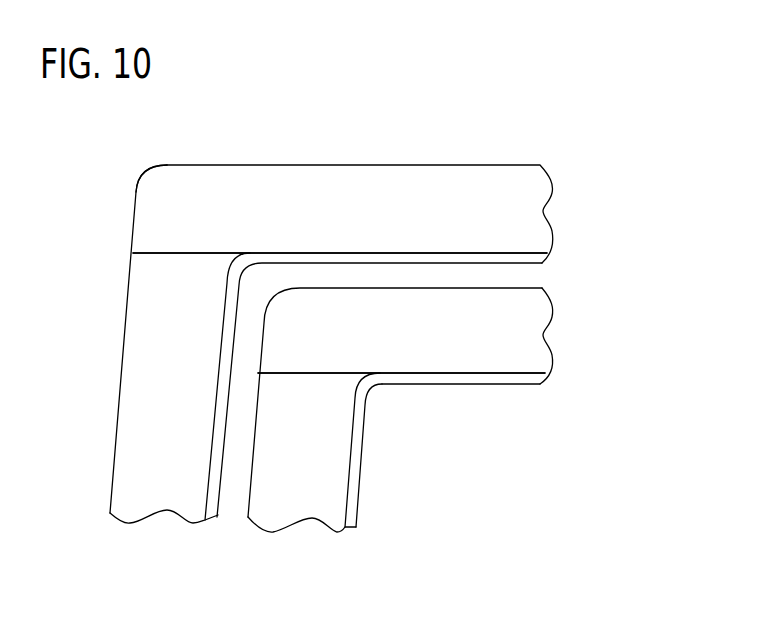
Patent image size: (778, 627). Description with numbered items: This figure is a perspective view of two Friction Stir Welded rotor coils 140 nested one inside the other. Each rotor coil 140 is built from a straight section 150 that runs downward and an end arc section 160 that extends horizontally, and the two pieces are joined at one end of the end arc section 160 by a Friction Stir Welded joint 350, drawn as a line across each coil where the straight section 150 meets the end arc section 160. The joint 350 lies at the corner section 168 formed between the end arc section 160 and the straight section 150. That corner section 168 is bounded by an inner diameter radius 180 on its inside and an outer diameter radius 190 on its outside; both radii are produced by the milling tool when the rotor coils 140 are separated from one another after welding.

The rotor coil 140 is at (577, 214).
The straight section 150 is at (153, 403).
The end arc section 160 is at (362, 200).
The corner section 168 is at (380, 382).
The inner diameter radius 180 is at (373, 392).
The outer diameter radius 190 is at (150, 173).
The Friction Stir Welded joint 350 is at (133, 253).